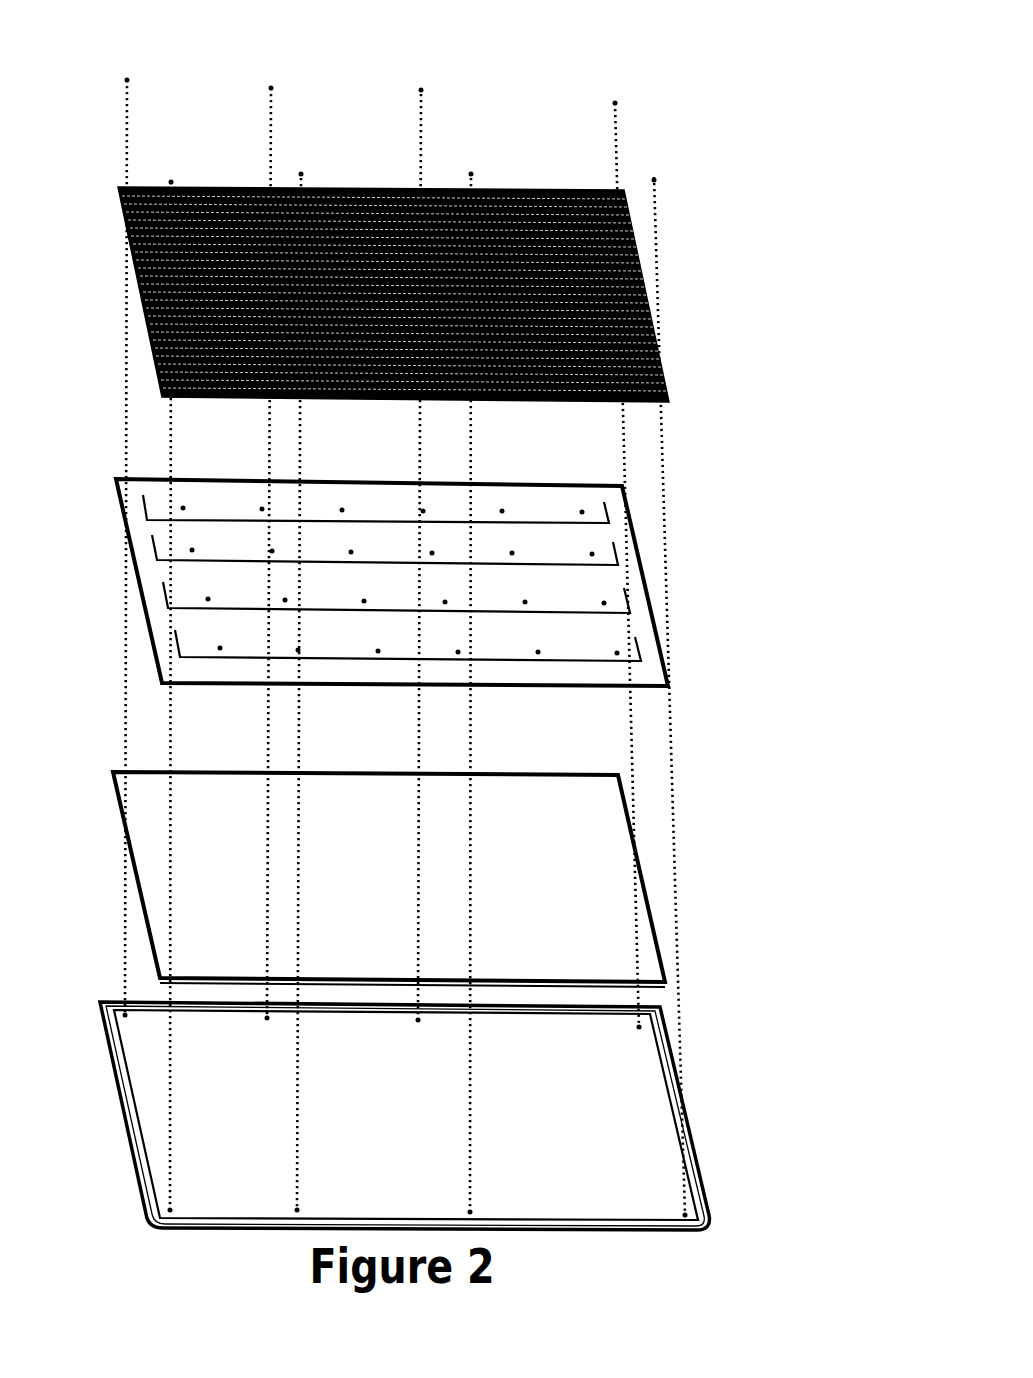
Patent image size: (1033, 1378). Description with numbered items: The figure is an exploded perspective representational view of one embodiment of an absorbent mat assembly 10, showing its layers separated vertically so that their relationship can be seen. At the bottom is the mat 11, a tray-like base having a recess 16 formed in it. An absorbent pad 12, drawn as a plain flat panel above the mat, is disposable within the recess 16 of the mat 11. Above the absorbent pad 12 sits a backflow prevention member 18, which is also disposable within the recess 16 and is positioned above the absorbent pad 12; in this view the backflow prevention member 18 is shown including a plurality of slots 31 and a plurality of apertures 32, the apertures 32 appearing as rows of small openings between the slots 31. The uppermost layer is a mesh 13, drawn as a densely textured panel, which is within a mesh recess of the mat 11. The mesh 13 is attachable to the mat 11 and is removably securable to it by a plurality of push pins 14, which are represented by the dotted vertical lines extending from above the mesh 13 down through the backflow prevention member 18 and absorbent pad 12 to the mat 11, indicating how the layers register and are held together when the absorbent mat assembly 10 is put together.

The absorbent mat assembly 10 is at (790, 718).
The mat 11 is at (435, 1116).
The absorbent pad 12 is at (612, 938).
The mesh 13 is at (655, 183).
The push pins 14 is at (129, 78).
The recess 16 is at (417, 1114).
The backflow prevention member 18 is at (627, 560).
The slots 31 is at (147, 507).
The apertures 32 is at (206, 597).